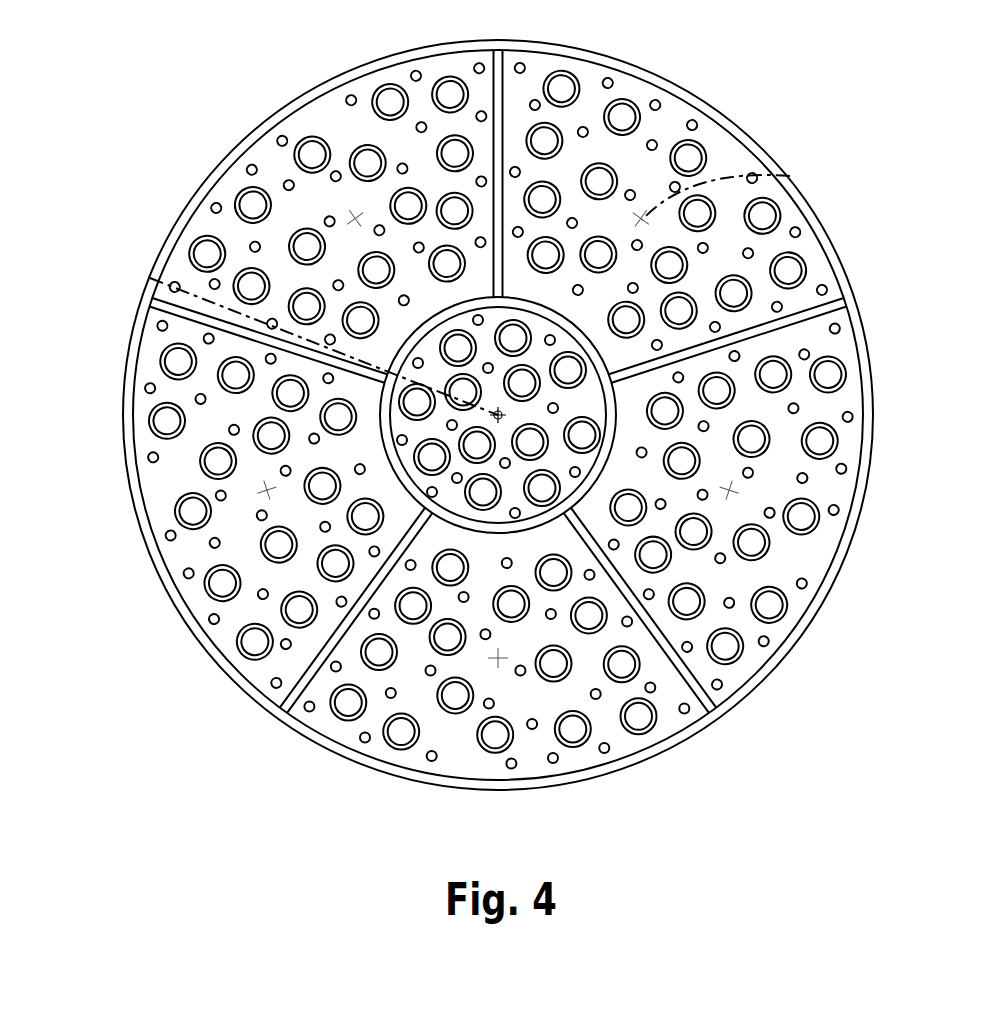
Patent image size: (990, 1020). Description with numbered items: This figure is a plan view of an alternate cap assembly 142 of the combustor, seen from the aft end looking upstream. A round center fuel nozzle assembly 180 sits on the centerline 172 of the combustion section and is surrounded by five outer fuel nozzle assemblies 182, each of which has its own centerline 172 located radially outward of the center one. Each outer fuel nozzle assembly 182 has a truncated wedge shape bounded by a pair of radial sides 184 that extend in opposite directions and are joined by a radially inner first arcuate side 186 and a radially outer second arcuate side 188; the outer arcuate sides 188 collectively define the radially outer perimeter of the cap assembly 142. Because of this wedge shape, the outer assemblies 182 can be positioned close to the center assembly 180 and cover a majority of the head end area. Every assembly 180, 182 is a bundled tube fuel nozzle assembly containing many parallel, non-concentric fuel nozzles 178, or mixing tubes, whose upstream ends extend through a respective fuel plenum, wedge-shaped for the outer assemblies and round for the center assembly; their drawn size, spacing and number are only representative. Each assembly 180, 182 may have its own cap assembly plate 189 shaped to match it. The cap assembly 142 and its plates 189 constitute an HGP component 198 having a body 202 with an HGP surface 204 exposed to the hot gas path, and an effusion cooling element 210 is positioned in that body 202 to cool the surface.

The cap assembly 142 is at (112, 130).
The centerline 172 is at (147, 276).
The fuel nozzles 178 is at (373, 553).
The center fuel nozzle assembly 180 is at (388, 423).
The outer fuel nozzle assembly 182 is at (260, 150).
The radial sides 184 is at (840, 327).
The first arcuate side 186 is at (590, 512).
The second arcuate side 188 is at (800, 622).
The cap assembly plate 189 is at (177, 548).
The HGP component 198 is at (827, 266).
The body 202 is at (303, 125).
The HGP surface 204 is at (225, 183).
The effusion cooling element 210 is at (480, 66).